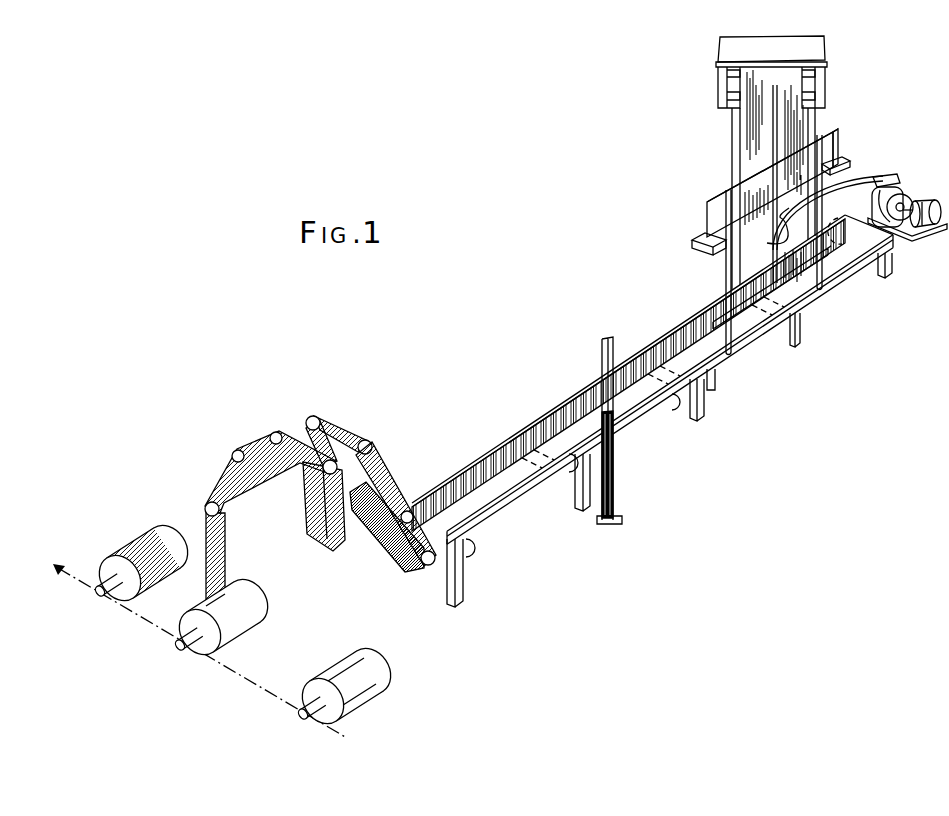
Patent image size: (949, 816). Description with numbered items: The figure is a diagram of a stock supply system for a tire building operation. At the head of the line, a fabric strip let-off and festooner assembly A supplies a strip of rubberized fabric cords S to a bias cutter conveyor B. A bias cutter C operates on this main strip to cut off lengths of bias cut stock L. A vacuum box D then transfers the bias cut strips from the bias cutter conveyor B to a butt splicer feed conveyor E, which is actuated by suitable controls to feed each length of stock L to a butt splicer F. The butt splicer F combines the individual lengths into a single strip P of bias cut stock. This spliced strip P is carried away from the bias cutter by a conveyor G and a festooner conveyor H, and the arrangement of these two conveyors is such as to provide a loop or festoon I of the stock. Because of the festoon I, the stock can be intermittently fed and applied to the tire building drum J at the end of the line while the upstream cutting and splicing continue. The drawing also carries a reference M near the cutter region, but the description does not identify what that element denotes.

The fabric strip let-off and festooner assembly A is at (712, 80).
The bias cutter conveyor B is at (731, 138).
The strip of rubberized fabric cords S is at (803, 125).
The bias cutter C is at (705, 213).
The vacuum box D is at (738, 302).
The butt splicer feed conveyor E is at (838, 268).
The butt splicer F is at (600, 348).
The conveyor G is at (493, 512).
The festooner conveyor H is at (383, 547).
The loop or festoon I is at (318, 535).
The tire building drum J is at (110, 567).
The length of bias cut stock L is at (768, 273).
The nozzle M is at (767, 243).
The single strip of bias cut stock P is at (473, 478).